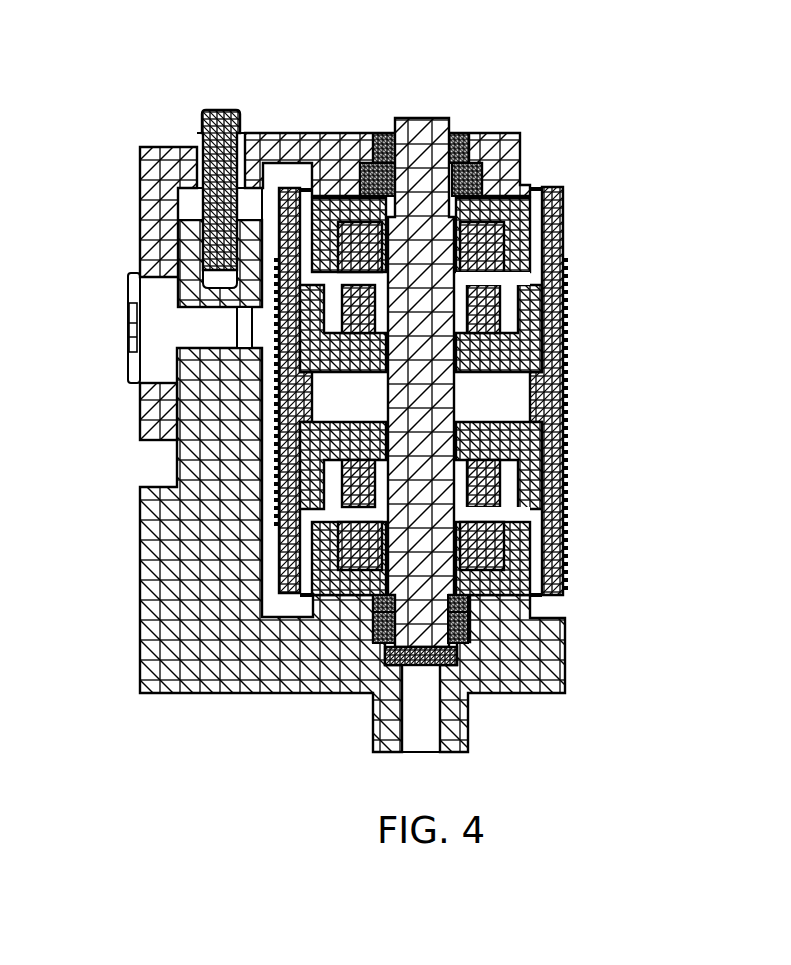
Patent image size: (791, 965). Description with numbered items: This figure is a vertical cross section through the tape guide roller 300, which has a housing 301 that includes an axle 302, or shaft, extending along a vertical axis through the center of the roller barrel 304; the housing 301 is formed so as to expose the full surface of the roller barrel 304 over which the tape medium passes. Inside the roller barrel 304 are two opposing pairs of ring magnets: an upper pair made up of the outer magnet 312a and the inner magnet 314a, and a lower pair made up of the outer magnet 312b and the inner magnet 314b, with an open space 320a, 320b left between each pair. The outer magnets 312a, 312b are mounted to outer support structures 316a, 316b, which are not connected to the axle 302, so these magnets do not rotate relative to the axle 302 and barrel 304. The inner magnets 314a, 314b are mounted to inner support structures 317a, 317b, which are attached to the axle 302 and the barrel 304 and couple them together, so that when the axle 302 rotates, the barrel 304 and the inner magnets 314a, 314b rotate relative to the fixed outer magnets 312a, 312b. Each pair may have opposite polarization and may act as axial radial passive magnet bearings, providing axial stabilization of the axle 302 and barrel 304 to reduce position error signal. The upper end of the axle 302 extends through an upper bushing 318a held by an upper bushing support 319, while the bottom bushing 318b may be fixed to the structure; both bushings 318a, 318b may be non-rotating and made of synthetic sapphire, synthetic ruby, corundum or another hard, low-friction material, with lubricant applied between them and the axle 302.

The tape guide roller 300 is at (544, 149).
The housing 301 is at (213, 477).
The axle 302 is at (423, 117).
The roller barrel 304 is at (520, 212).
The upper outer ring magnet 312a is at (495, 247).
The lower outer ring magnet 312b is at (497, 568).
The upper inner ring magnet 314a is at (498, 304).
The lower inner ring magnet 314b is at (498, 490).
The upper outer support structure 316a is at (543, 188).
The lower outer support structure 316b is at (522, 580).
The upper inner support structure 317a is at (523, 350).
The lower inner support structure 317b is at (520, 438).
The upper bushing 318a is at (461, 132).
The bottom bushing 318b is at (470, 628).
The upper bushing support 319 is at (298, 148).
The upper open space 320a is at (478, 280).
The lower open space 320b is at (478, 515).